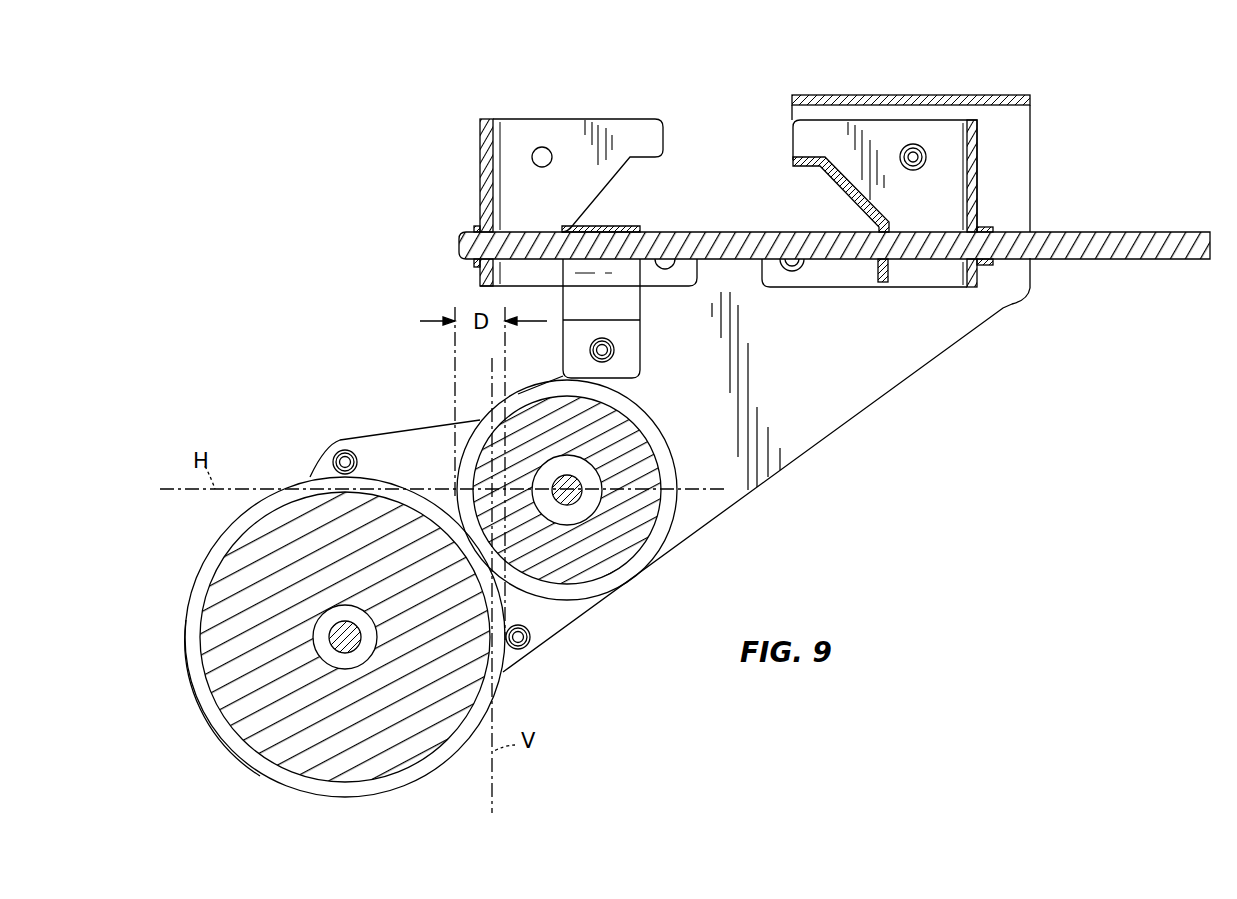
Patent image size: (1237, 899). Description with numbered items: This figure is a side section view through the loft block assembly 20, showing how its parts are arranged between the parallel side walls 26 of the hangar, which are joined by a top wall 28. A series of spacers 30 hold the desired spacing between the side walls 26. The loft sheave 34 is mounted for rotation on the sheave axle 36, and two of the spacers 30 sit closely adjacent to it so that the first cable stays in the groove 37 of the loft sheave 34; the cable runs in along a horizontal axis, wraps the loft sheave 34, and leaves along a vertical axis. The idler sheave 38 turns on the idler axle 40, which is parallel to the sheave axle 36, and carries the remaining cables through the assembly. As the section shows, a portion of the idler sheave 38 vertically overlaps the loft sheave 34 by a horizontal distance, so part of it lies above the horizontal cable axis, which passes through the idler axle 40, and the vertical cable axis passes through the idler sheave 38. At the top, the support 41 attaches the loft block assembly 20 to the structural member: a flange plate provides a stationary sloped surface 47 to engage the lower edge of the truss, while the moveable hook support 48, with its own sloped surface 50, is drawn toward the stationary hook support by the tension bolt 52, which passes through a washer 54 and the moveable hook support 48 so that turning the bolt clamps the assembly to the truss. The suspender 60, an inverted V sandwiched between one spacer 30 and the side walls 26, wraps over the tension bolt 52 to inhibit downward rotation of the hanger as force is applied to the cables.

The loft block assembly 20 is at (775, 63).
The side walls 26 is at (395, 440).
The top wall 28 is at (925, 95).
The spacers 30 is at (612, 352).
The loft sheave 34 is at (455, 715).
The sheave axle 36 is at (340, 655).
The groove 37 is at (195, 690).
The idler sheave 38 is at (617, 557).
The idler axle 40 is at (600, 507).
The support 41 is at (850, 82).
The stationary sloped surface 47 is at (850, 188).
The moveable hook support 48 is at (483, 118).
The sloped surface 50 is at (597, 196).
The tension bolt 52 is at (459, 250).
The washer 54 is at (476, 225).
The suspender 60 is at (620, 300).